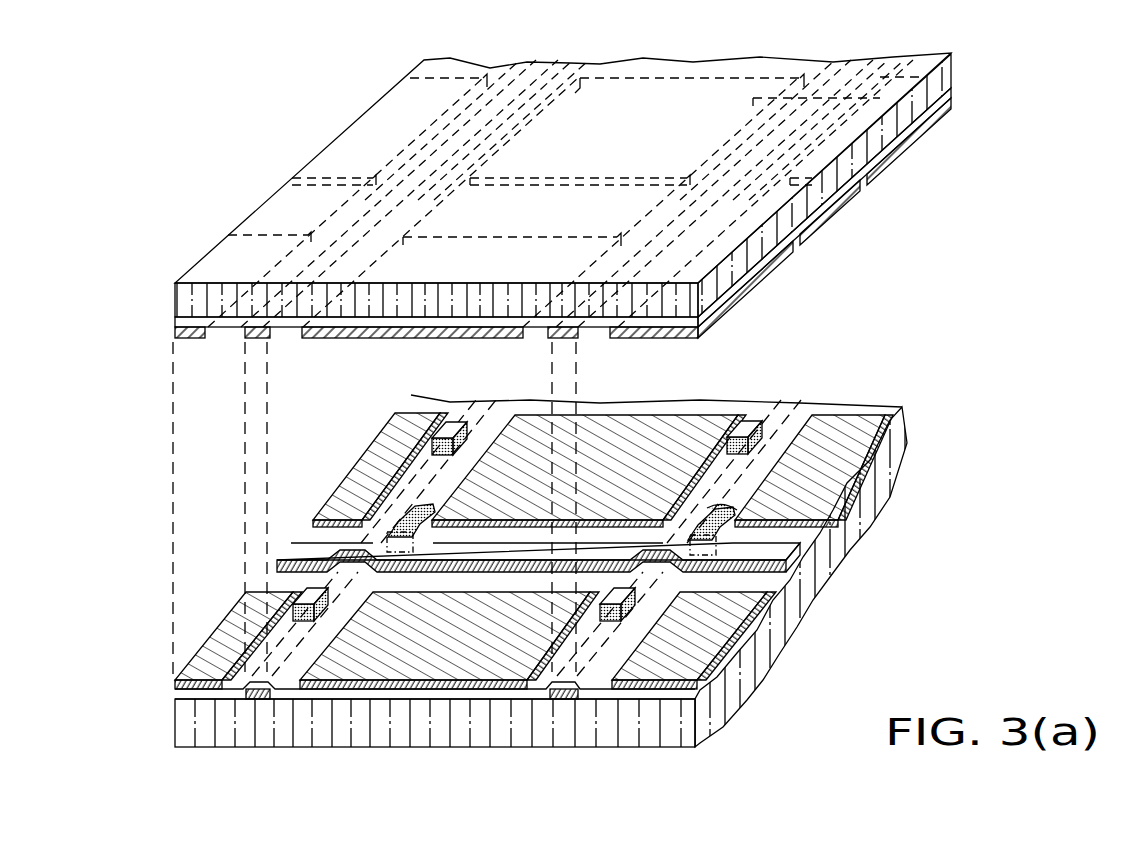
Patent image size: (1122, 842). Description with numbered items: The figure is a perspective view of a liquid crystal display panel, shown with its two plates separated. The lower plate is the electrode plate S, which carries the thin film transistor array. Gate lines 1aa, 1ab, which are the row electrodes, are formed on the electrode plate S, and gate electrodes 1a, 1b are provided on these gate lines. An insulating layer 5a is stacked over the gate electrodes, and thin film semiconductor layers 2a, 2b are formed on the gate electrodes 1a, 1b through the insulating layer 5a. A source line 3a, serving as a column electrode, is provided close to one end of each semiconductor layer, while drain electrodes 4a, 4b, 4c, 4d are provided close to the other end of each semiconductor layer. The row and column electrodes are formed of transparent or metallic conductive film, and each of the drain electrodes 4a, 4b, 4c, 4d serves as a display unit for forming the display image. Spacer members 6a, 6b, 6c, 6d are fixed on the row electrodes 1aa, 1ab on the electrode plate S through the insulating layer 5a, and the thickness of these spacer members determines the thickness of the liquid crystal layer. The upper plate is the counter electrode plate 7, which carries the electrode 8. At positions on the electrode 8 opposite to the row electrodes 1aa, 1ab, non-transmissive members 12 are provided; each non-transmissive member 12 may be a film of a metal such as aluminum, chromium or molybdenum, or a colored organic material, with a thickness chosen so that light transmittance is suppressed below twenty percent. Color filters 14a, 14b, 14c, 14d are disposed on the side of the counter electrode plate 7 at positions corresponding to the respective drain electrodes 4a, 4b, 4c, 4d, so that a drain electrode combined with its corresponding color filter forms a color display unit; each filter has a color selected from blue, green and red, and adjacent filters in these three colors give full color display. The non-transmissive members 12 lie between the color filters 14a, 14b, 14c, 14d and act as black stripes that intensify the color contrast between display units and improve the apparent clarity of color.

The counter electrode plate 7 is at (175, 302).
The electrode of the counter electrode plate 8 is at (175, 320).
The non-transmissive member 12 is at (238, 334).
The color filter 14a is at (960, 85).
The color filter 14b is at (893, 160).
The color filter 14c is at (374, 335).
The color filter 14d is at (747, 288).
The electrode plate S is at (190, 729).
The insulating layer 5a is at (180, 690).
The source line 3a is at (303, 552).
The gate electrode 1a is at (388, 545).
The gate electrode 1b is at (732, 547).
The gate line 1aa is at (264, 703).
The gate line 1ab is at (575, 702).
The thin film semiconductor layer 2a is at (357, 475).
The thin film semiconductor layer 2b is at (732, 512).
The drain electrode 4a is at (630, 443).
The drain electrode 4b is at (843, 440).
The drain electrode 4c is at (453, 663).
The drain electrode 4d is at (697, 660).
The spacer member 6a is at (457, 420).
The spacer member 6b is at (752, 418).
The spacer member 6c is at (293, 594).
The spacer member 6d is at (640, 600).